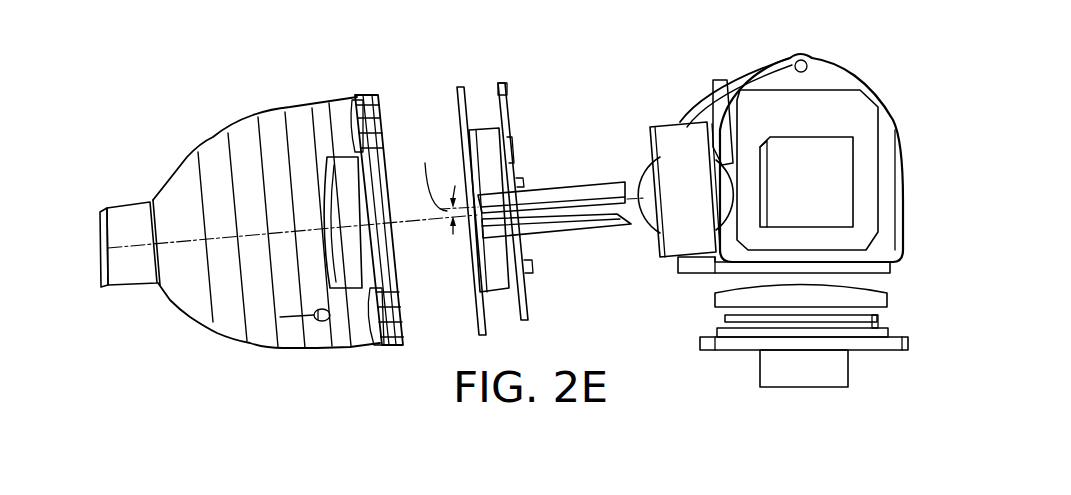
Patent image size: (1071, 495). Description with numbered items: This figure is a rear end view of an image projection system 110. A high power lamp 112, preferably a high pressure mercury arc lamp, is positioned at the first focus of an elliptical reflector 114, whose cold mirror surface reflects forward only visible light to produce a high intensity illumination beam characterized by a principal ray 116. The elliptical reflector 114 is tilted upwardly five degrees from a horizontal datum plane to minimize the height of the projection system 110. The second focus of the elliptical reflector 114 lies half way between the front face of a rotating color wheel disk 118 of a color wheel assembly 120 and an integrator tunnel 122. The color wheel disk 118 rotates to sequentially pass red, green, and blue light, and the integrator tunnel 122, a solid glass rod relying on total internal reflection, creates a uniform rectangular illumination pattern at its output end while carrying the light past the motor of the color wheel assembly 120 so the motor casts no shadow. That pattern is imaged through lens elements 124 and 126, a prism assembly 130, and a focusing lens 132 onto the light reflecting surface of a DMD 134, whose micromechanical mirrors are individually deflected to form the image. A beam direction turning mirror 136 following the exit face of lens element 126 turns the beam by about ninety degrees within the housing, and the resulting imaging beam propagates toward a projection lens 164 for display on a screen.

The image projection system 110 is at (365, 392).
The high power lamp 112 is at (125, 215).
The elliptical reflector 114 is at (213, 150).
The principal ray 116 is at (423, 220).
The color wheel disk 118 is at (460, 122).
The color wheel assembly 120 is at (486, 108).
The integrator tunnel 122 is at (580, 203).
The lens element 124 is at (643, 180).
The lens element 126 is at (728, 155).
The prism assembly 130 is at (905, 264).
The focusing lens 132 is at (727, 300).
The DMD 134 is at (728, 318).
The beam direction turning mirror 136 is at (830, 201).
The projection lens 164 is at (750, 72).